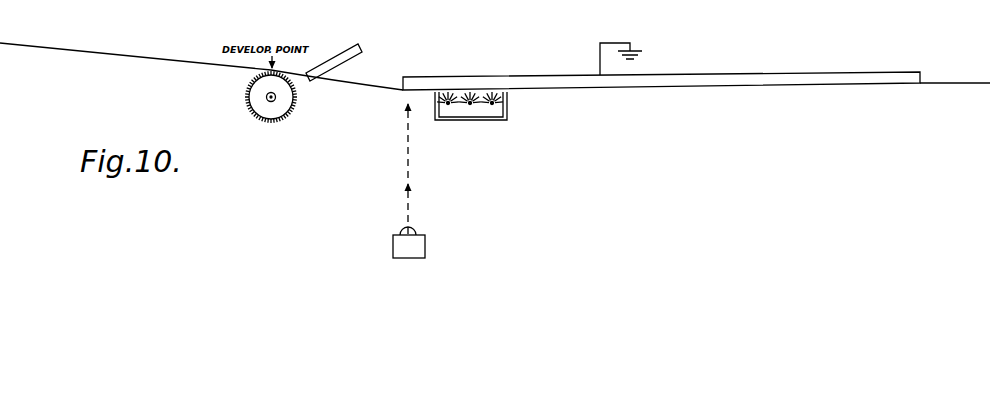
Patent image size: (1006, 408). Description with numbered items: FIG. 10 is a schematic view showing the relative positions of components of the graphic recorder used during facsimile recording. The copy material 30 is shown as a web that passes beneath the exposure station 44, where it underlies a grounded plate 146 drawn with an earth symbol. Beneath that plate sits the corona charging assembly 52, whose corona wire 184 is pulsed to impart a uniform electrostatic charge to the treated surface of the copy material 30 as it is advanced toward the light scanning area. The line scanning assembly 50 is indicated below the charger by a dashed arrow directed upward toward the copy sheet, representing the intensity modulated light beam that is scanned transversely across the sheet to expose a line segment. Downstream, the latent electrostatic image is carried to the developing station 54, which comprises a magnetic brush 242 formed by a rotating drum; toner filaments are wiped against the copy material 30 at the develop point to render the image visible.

The copy material 30 is at (139, 58).
The magnetic brush 242 is at (245, 91).
The developing station 54 is at (242, 132).
The conductive plate 146 is at (718, 75).
The corona wire 184 is at (470, 102).
The corona charging assembly 52 is at (512, 118).
The exposure station 44 is at (502, 124).
The line scanning assembly 50 is at (426, 242).